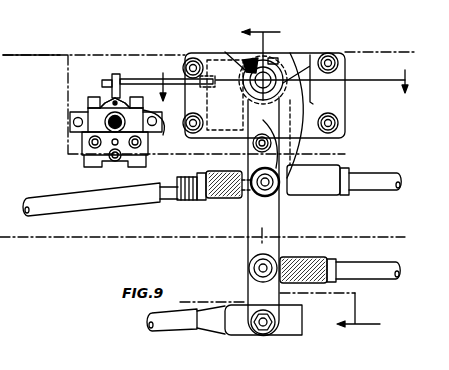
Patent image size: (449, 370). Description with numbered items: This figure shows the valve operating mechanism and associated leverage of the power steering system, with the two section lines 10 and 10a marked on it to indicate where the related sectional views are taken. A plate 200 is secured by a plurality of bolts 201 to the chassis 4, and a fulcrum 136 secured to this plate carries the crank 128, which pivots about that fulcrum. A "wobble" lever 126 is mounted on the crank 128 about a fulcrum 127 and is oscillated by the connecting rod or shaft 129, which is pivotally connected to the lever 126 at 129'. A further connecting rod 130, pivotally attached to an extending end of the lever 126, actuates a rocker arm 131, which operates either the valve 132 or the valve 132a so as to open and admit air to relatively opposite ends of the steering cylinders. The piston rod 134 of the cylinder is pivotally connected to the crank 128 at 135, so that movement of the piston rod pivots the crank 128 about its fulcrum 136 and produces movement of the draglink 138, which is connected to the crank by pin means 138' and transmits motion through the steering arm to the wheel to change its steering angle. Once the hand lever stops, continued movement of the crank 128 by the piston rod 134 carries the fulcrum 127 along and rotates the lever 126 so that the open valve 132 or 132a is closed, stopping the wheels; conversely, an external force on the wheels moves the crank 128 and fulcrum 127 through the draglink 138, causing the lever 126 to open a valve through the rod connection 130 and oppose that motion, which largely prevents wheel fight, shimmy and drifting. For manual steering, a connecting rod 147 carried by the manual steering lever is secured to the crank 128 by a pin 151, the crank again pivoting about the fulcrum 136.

The chassis 4 is at (28, 54).
The section line 10- 10 is at (321, 173).
The section line 10a- 10a is at (294, 80).
The wobble lever 126 is at (233, 127).
The fulcrum 127 is at (272, 148).
The crank 128 is at (255, 218).
The connecting rod (shaft) 129 is at (388, 176).
The pivotal connection 129' is at (225, 200).
The connecting rod 130 is at (147, 80).
The rocker arm 131 is at (115, 76).
The valve 132 is at (124, 132).
The valve 132a is at (82, 111).
The piston rod 134 is at (368, 267).
The pivotal connection 135 is at (265, 268).
The fulcrum 136 is at (268, 44).
The draglink 138 is at (163, 320).
The pin means 138' is at (284, 318).
The connecting rod 147 is at (57, 198).
The pin 151 is at (282, 185).
The plate 200 is at (337, 92).
The bolts 201 is at (333, 56).